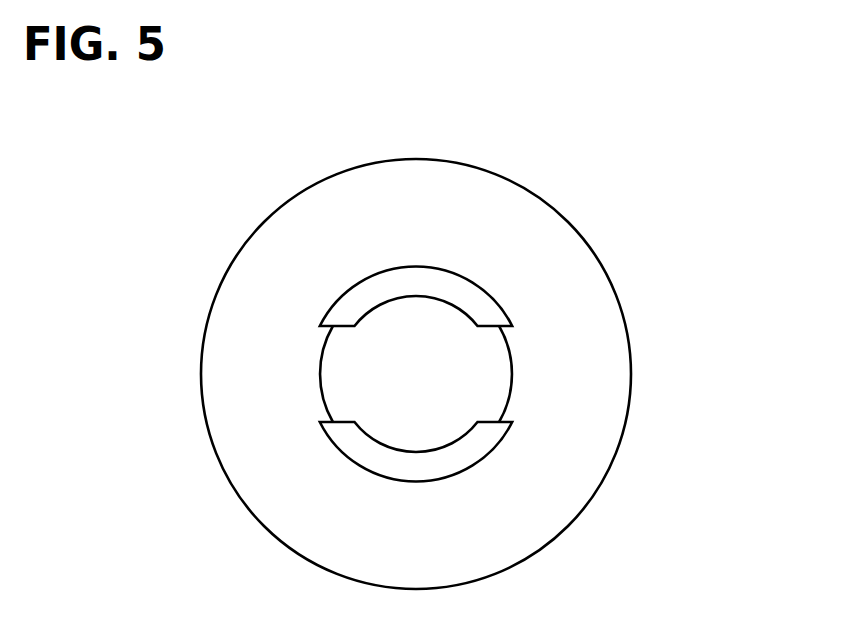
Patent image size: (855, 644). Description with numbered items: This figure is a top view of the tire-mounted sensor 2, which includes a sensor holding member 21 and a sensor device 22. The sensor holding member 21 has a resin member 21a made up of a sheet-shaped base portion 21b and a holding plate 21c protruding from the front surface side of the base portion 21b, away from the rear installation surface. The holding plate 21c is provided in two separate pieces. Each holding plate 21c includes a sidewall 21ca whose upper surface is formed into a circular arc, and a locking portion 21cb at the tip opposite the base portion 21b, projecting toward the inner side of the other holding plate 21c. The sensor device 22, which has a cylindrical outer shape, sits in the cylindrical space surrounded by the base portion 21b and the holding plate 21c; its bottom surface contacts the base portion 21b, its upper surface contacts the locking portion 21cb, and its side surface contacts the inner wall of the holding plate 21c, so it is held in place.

The tire-mounted sensor 2 is at (232, 221).
The sensor holding member 21 is at (644, 312).
The resin member 21a is at (727, 413).
The base portion 21b is at (615, 464).
The holding plate 21c is at (502, 438).
The sidewall 21ca is at (363, 278).
The locking portion 21cb is at (442, 287).
The sensor device 22 is at (513, 375).